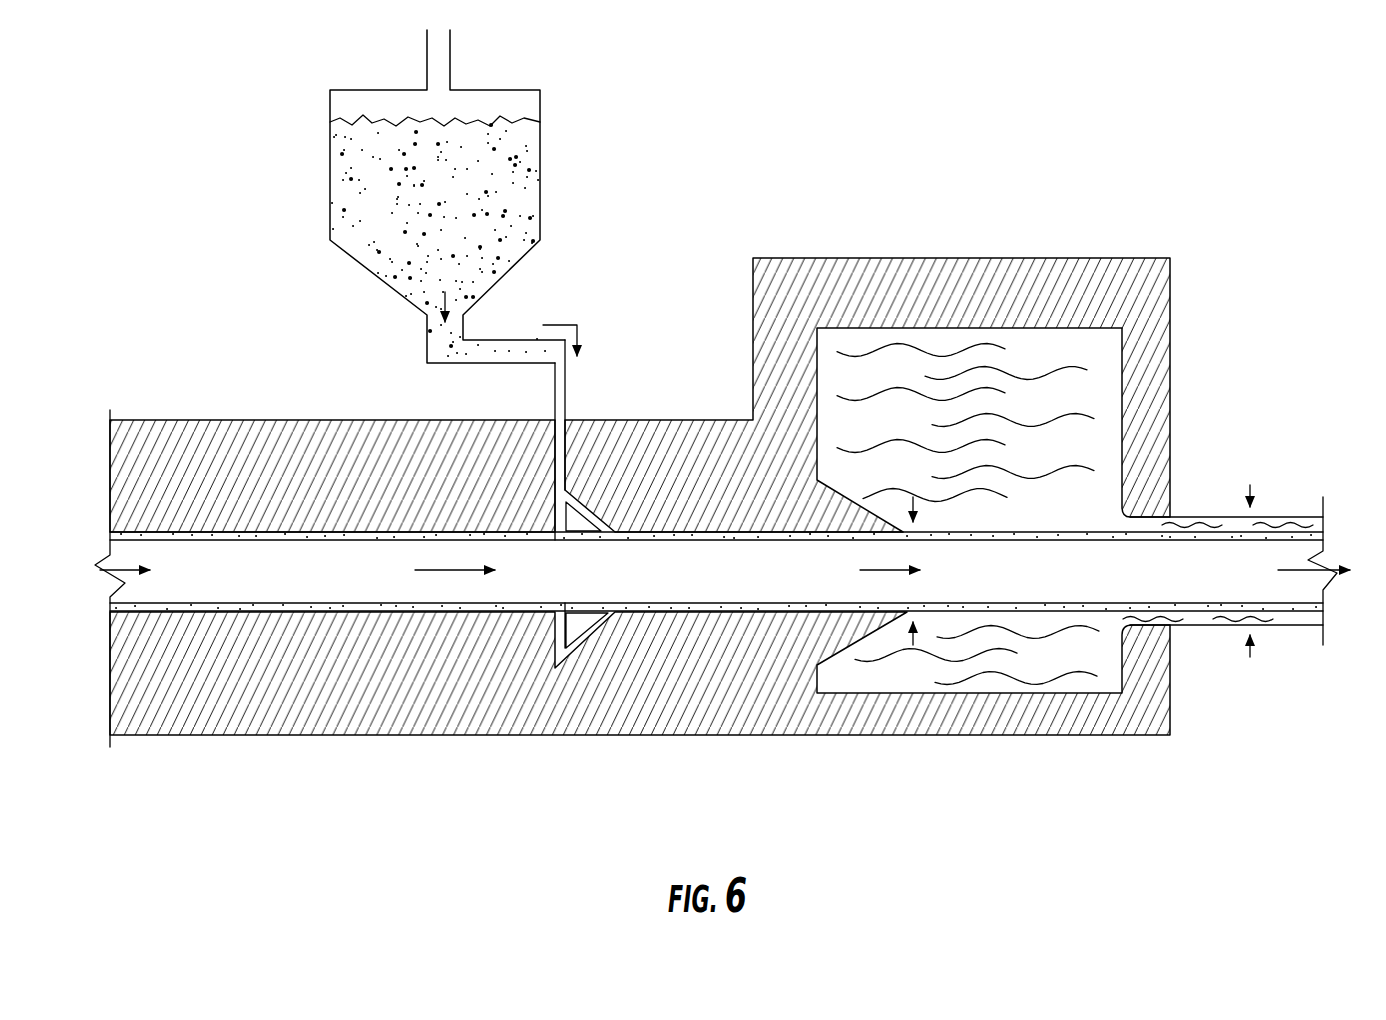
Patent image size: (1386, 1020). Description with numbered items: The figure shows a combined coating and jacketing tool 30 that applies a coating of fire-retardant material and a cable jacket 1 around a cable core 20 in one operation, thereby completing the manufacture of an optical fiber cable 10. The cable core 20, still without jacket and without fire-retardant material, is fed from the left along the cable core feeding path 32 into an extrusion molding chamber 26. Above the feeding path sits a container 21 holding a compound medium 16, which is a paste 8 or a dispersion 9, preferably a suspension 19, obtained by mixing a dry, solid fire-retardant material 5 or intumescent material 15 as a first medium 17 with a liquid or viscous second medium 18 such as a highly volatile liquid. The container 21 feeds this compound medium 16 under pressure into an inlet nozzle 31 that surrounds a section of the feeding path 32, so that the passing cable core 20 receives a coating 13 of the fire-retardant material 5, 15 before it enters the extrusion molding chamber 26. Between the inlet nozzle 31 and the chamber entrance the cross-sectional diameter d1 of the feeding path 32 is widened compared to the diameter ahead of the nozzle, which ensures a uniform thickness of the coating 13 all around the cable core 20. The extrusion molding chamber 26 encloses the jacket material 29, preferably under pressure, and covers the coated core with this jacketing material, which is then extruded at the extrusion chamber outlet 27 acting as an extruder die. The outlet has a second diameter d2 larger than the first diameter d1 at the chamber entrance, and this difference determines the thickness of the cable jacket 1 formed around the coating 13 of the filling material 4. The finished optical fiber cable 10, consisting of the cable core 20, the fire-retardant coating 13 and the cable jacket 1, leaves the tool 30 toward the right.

The cable jacket 1 is at (1290, 517).
The filling material 4 is at (744, 562).
The fire-retardant material 5 is at (744, 562).
The paste 8 is at (367, 240).
The dispersion 9 is at (367, 240).
The optical fiber cable 10 is at (1231, 548).
The coating 13 is at (708, 537).
The intumescent material 15 is at (450, 89).
The compound medium 16 is at (367, 240).
The first medium 17 is at (458, 142).
The second medium 18 is at (367, 240).
The suspension 19 is at (345, 158).
The cable core 20 is at (1122, 545).
The container 21 is at (422, 196).
The extrusion molding chamber 26 is at (1027, 438).
The extrusion chamber outlet 27 is at (895, 438).
The jacket material 29 is at (1058, 405).
The combined coating and jacketing tool 30 is at (718, 437).
The inlet nozzle 31 is at (590, 625).
The cable core feeding path 32 is at (820, 845).
The first diameter d1 is at (917, 507).
The second diameter d2 is at (1250, 660).